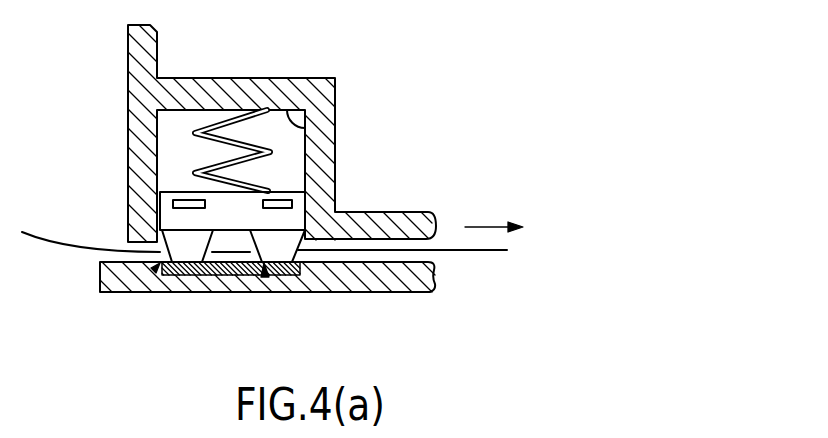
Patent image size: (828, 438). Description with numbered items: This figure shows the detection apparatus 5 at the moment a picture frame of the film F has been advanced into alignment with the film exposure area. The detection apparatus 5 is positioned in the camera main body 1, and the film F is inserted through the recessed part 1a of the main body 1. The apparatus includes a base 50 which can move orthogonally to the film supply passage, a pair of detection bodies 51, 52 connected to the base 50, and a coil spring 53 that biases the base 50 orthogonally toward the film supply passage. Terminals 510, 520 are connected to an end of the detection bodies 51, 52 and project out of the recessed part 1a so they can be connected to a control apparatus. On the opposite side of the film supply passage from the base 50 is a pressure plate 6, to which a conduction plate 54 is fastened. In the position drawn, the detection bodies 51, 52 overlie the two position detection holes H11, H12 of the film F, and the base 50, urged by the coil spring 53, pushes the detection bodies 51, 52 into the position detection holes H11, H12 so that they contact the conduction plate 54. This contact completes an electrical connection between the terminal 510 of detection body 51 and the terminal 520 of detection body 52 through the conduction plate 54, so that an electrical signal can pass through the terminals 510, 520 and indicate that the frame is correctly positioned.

The detection apparatus 5 is at (410, 77).
The camera main body 1 is at (330, 97).
The recessed part 1a is at (305, 128).
The coil spring 53 is at (214, 114).
The base 50 is at (293, 215).
The terminal 510 is at (178, 201).
The terminal 520 is at (287, 200).
The detection body 51 is at (187, 250).
The detection body 52 is at (282, 242).
The pressure plate 6 is at (393, 268).
The conduction plate 54 is at (250, 268).
The film F is at (490, 250).
The position detection hole H11 is at (157, 267).
The position detection hole H12 is at (266, 276).